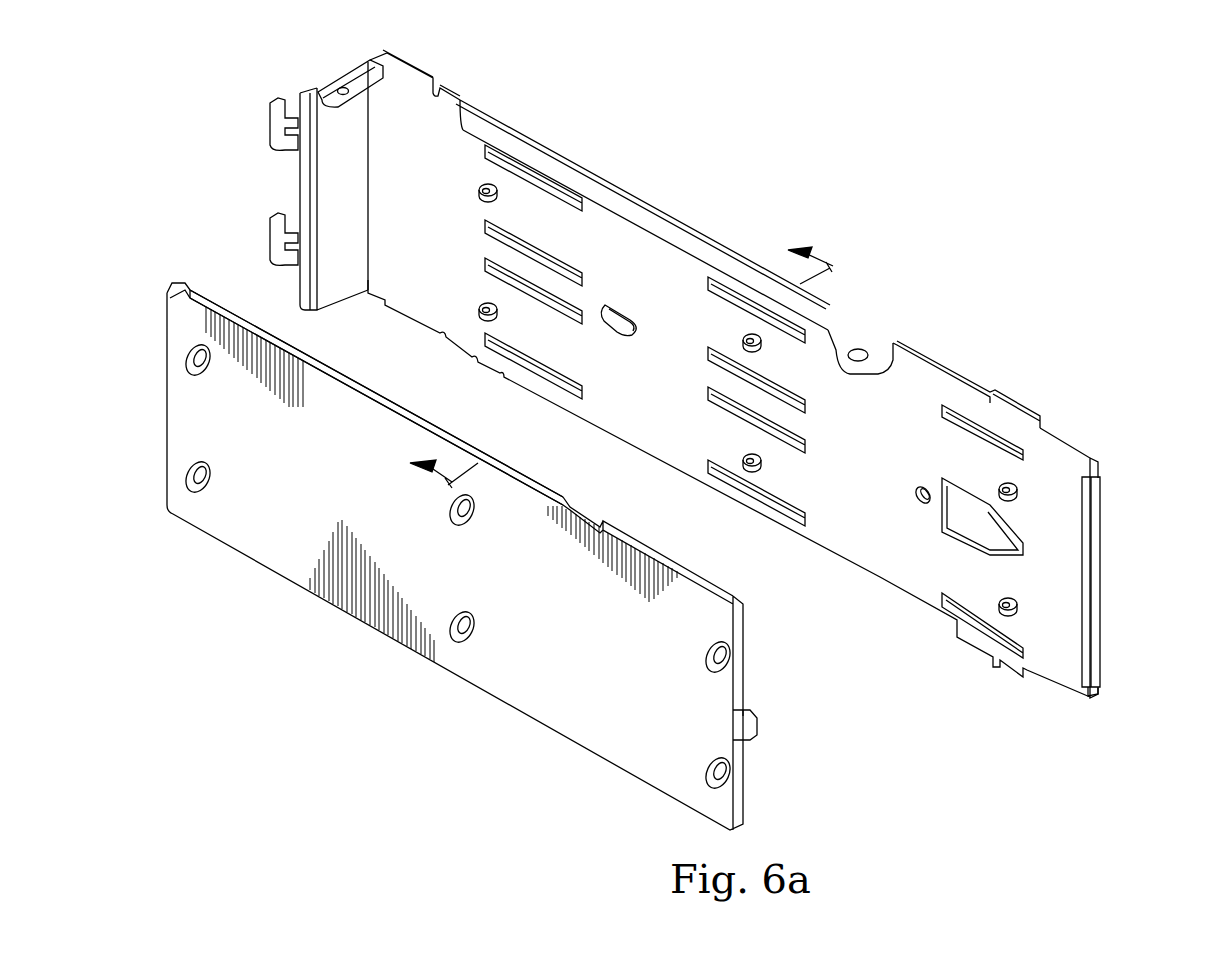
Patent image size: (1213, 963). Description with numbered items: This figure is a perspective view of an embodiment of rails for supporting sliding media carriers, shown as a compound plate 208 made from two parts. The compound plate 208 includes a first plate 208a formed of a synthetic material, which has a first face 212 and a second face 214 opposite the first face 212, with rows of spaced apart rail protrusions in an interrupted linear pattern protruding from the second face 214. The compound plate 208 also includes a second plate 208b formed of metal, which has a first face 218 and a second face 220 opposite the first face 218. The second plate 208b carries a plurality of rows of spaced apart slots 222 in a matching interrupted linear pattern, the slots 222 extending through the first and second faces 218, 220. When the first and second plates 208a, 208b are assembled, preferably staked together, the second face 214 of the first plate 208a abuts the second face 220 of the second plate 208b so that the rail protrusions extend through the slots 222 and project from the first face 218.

The compound plate 208 is at (712, 130).
The first plate 208a is at (457, 665).
The second plate 208b is at (948, 373).
The first face 212 is at (613, 652).
The second face 214 is at (212, 291).
The first face 218 is at (1091, 458).
The second face 220 is at (1072, 562).
The slots 222 is at (704, 441).